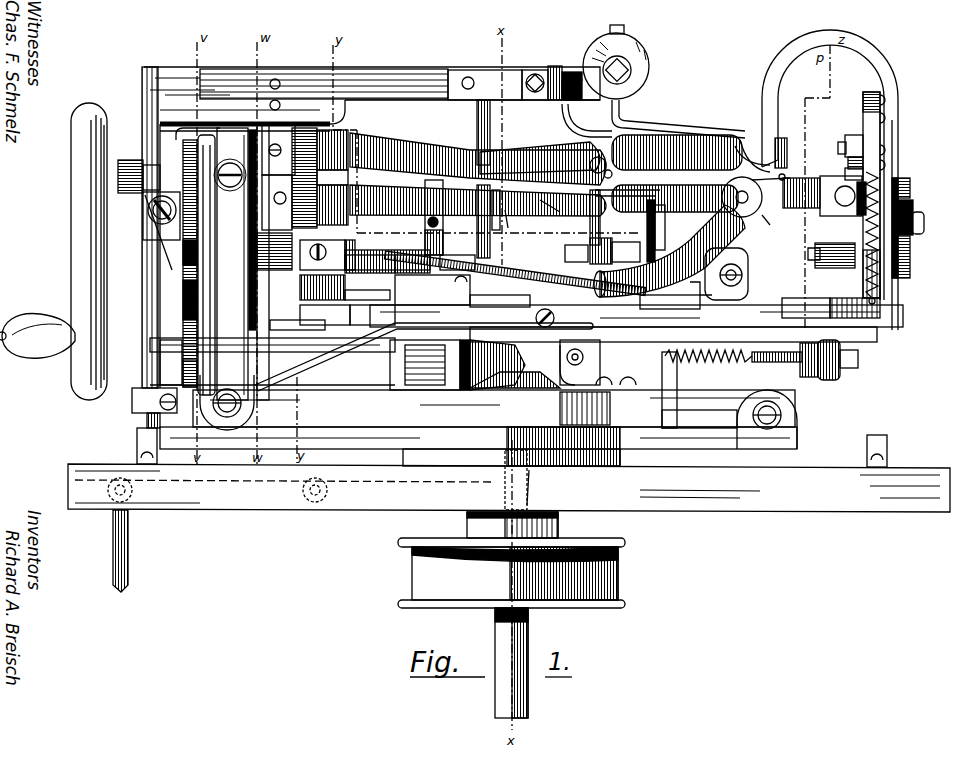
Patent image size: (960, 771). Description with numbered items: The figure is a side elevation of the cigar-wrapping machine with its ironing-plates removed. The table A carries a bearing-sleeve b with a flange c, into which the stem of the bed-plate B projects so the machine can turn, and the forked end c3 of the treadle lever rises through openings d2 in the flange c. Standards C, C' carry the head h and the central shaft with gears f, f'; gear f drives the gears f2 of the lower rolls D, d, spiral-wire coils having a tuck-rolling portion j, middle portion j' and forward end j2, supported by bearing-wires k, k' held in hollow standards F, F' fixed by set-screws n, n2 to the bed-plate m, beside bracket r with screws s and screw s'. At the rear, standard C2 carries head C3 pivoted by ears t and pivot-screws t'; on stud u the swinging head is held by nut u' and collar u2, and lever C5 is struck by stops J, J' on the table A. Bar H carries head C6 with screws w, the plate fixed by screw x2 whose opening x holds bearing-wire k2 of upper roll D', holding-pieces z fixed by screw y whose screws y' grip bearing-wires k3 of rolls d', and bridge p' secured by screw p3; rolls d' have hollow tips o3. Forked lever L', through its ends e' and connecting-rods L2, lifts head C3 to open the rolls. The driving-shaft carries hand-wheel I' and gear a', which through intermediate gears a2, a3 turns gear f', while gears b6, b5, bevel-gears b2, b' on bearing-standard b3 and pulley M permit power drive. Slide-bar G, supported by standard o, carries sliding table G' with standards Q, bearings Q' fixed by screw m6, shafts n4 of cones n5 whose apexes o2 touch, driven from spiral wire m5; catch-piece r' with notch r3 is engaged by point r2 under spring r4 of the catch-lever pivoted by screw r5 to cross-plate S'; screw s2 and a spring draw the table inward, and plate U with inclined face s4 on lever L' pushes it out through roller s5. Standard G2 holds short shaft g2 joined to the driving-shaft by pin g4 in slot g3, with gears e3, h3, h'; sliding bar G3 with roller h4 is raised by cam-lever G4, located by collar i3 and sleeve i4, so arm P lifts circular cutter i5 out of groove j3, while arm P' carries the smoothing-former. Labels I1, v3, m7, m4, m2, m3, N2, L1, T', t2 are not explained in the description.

The table A is at (509, 481).
The stop J is at (135, 510).
The stop J' is at (883, 451).
The forked end of lever c3 is at (535, 487).
The bearing-sleeve b is at (512, 525).
The pulley M is at (511, 573).
The bevel-gear b' is at (511, 663).
The forked lever L' is at (494, 408).
The bed-plate B is at (478, 438).
The upright standard C is at (511, 446).
The bracket I1 is at (774, 419).
The ends of forked lever e' is at (227, 402).
The hand-wheel I' is at (53, 251).
The upright standard C' is at (234, 227).
The standard C2 is at (172, 306).
The lever C5 is at (160, 378).
The collar u2 is at (147, 312).
The nut u' is at (134, 171).
The pivot-screws t' is at (161, 216).
The ears t is at (148, 214).
The head C3 is at (165, 143).
The gear f' is at (198, 257).
The intermediate gear a2 is at (206, 265).
The intermediate gear a3 is at (207, 270).
The gear a' is at (204, 270).
The connecting-rods L2 is at (236, 264).
The bar v3 is at (252, 290).
The intermediate gear b6 is at (197, 300).
The gear b5 is at (191, 376).
The head C6 is at (278, 177).
The gear m7 is at (274, 251).
The gear m4 is at (236, 252).
The shaft m2 is at (328, 238).
The set-screw n is at (316, 266).
The set-screw n2 is at (330, 264).
The spiral wire m5 is at (374, 251).
The shaft m3 is at (401, 264).
The gear f2 is at (320, 170).
The gear f is at (332, 172).
The bar H is at (372, 80).
The screws w is at (388, 110).
The screw p3 is at (470, 77).
The holding-pieces z is at (552, 76).
The screw y is at (535, 94).
The screw x2 is at (605, 62).
The screws y' is at (661, 112).
The bearing-wires k3 is at (596, 134).
The curved arm P' is at (474, 132).
The curved arm P is at (474, 221).
The opening x is at (431, 217).
The stud u is at (499, 211).
The tuck-rolling portion j is at (508, 218).
The upper roll D' is at (507, 147).
The intermediate upper rolls d' is at (540, 151).
The openings d2 is at (594, 161).
The hollow tip o3 is at (601, 177).
The flexible rolls D is at (497, 208).
The intermediate roll d is at (548, 213).
The bearing-wire k2 is at (692, 135).
The bearing-wire k is at (675, 192).
The forward end of roll j2 is at (745, 154).
The adjustable bearings Q' is at (675, 251).
The standards Q is at (696, 286).
The shafts n4 is at (742, 203).
The revolving cones n5 is at (765, 182).
The apexes o2 is at (788, 173).
The groove j3 is at (768, 225).
The screw m6 is at (735, 274).
The fixed bed-plate m is at (670, 302).
The bracket r is at (528, 248).
The bearing-wire k' is at (636, 231).
The middle rolling portion j' is at (637, 189).
The hollow standard F is at (588, 247).
The hollow standard F' is at (626, 247).
The flange c is at (457, 261).
The screw s' is at (499, 273).
The screws s is at (513, 278).
The point of catch-lever r2 is at (343, 287).
The notch r3 is at (367, 291).
The catch-piece r' is at (411, 300).
The spring r4 is at (372, 315).
The screw r5 is at (500, 302).
The inclined face s4 is at (456, 330).
The roller s5 is at (584, 365).
The adjustable plate U is at (598, 362).
The cross-plate S' is at (300, 316).
The slide-bar G is at (636, 316).
The sliding table G' is at (673, 317).
The standard o is at (424, 350).
The bar N2 is at (272, 361).
The bearing-standard b3 is at (424, 365).
The bevel-gear b2 is at (515, 365).
The bracket L1 is at (699, 390).
The slot g3 is at (742, 308).
The rod T' is at (785, 362).
The screw s2 is at (846, 361).
The bridge p' is at (830, 170).
The sliding bar G3 is at (866, 195).
The spring t2 is at (866, 226).
The gear h' is at (910, 228).
The intermediate gear h3 is at (912, 217).
The gear e3 is at (911, 257).
The upright standard G2 is at (885, 302).
The friction-roller h4 is at (848, 148).
The head h is at (835, 150).
The cam-lever G4 is at (854, 169).
The circular cutter i5 is at (785, 151).
The sleeve i4 is at (801, 190).
The adjustable collar i3 is at (843, 192).
The short shaft g2 is at (835, 255).
The transverse pin g4 is at (816, 265).